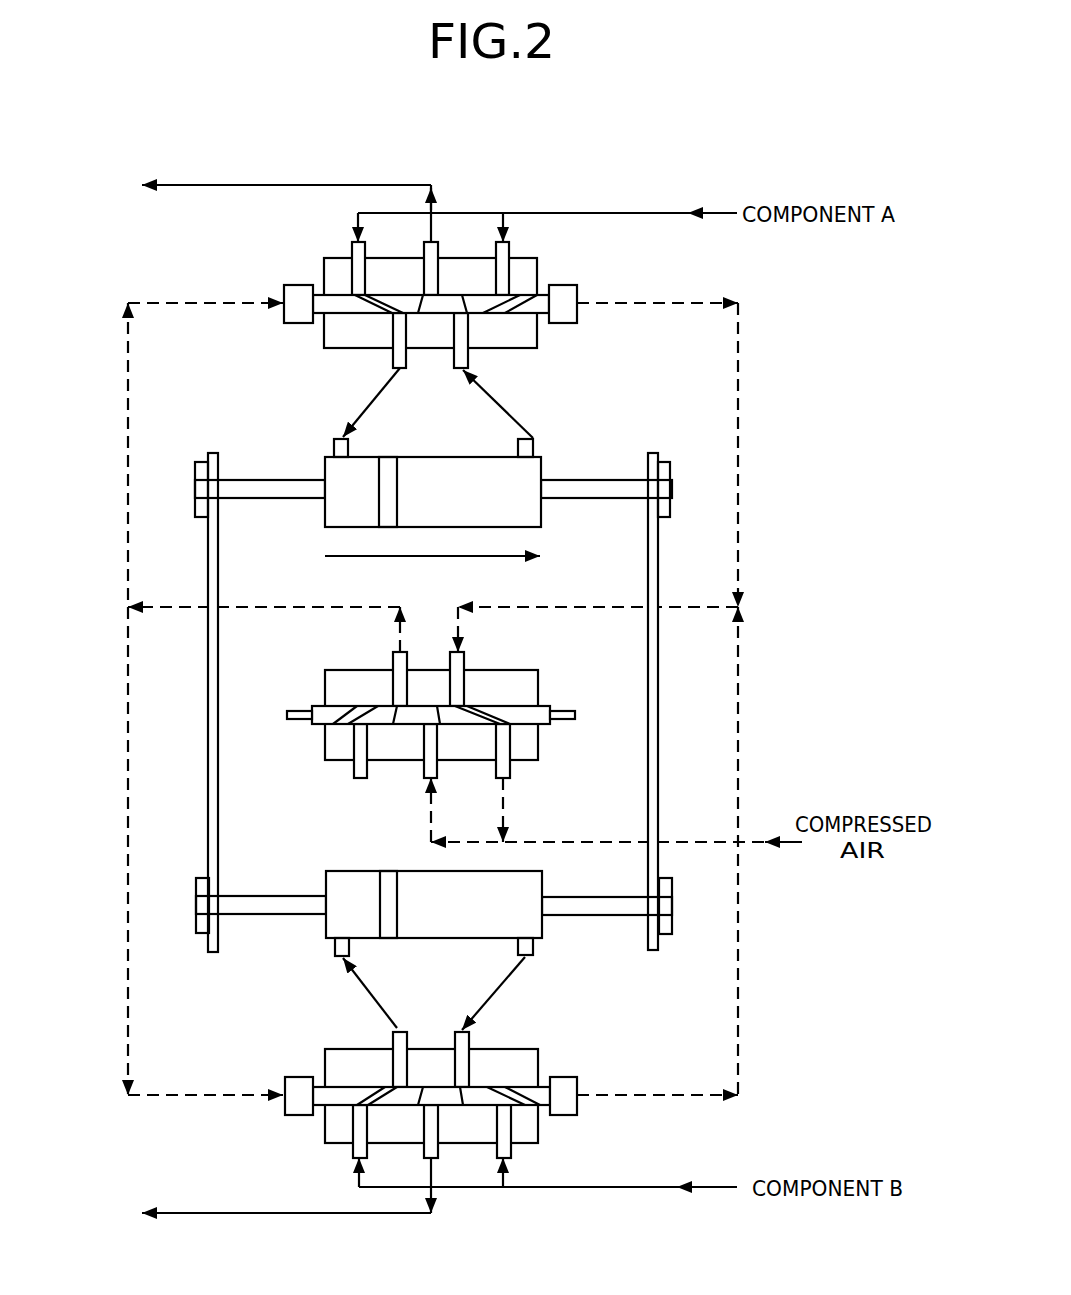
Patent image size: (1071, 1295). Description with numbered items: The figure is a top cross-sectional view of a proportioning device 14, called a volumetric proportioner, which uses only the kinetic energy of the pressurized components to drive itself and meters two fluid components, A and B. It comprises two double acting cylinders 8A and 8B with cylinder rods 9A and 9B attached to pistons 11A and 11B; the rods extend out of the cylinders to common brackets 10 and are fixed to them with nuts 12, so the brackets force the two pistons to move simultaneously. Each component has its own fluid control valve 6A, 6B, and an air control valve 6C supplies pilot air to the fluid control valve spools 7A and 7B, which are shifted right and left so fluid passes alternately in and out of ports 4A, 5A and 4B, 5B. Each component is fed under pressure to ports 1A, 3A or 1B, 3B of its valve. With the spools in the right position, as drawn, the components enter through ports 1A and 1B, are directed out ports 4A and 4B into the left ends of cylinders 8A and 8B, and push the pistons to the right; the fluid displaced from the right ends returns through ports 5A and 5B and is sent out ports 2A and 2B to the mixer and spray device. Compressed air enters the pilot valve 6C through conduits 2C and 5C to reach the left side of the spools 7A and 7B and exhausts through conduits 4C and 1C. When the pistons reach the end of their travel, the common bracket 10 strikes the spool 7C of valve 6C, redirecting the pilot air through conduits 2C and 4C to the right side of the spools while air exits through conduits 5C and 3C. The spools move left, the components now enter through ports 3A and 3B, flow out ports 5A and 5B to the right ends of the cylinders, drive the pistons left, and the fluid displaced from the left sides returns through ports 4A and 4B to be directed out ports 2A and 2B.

The port 1A is at (365, 246).
The port 2A is at (438, 246).
The port 3A is at (509, 246).
The port 4A is at (393, 362).
The port 5A is at (468, 360).
The fluid control valve 6A is at (324, 345).
The fluid control valve spool 7A is at (540, 318).
The double acting cylinder 8A is at (325, 470).
The cylinder rod 9A is at (298, 498).
The piston 11A is at (393, 517).
The port 1B is at (367, 1160).
The port 2B is at (438, 1160).
The port 3B is at (511, 1160).
The port 4B is at (407, 1040).
The port 5B is at (469, 1040).
The fluid control valve 6B is at (325, 1135).
The fluid control valve spool 7B is at (542, 1110).
The double acting cylinder 8B is at (326, 871).
The cylinder rod 9B is at (300, 915).
The piston 11B is at (385, 871).
The conduit 1C is at (510, 768).
The conduit 2C is at (437, 768).
The conduit 3C is at (367, 768).
The conduit 4C is at (464, 660).
The conduit 5C is at (407, 656).
The air control valve 6C is at (325, 695).
The spool 7C is at (548, 724).
The common bracket 10 is at (208, 570).
The nut 12 is at (197, 462).
The proportioning device 14 is at (112, 400).